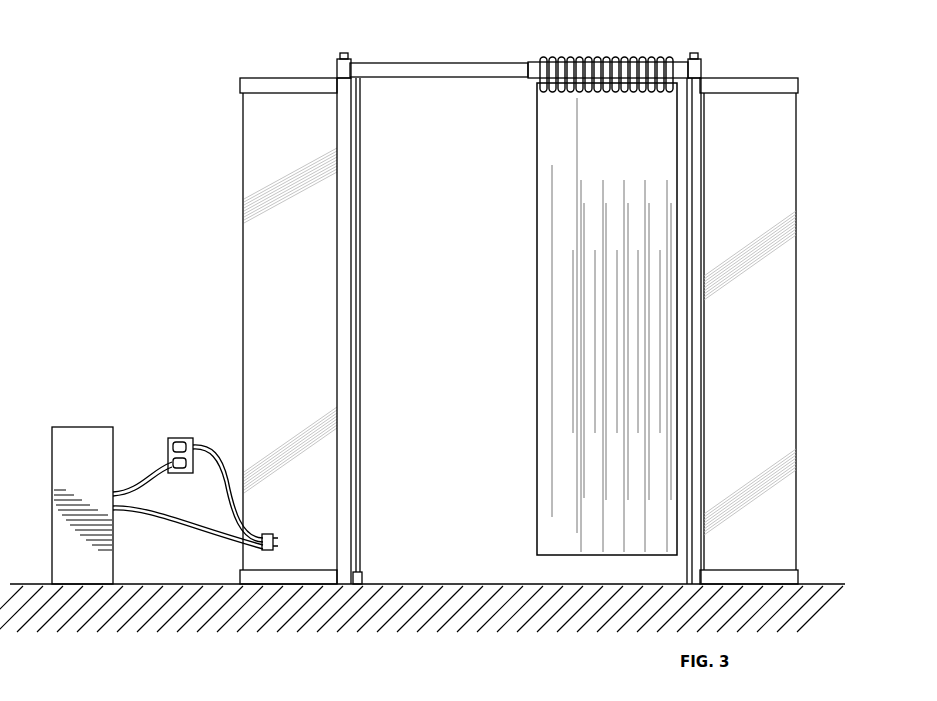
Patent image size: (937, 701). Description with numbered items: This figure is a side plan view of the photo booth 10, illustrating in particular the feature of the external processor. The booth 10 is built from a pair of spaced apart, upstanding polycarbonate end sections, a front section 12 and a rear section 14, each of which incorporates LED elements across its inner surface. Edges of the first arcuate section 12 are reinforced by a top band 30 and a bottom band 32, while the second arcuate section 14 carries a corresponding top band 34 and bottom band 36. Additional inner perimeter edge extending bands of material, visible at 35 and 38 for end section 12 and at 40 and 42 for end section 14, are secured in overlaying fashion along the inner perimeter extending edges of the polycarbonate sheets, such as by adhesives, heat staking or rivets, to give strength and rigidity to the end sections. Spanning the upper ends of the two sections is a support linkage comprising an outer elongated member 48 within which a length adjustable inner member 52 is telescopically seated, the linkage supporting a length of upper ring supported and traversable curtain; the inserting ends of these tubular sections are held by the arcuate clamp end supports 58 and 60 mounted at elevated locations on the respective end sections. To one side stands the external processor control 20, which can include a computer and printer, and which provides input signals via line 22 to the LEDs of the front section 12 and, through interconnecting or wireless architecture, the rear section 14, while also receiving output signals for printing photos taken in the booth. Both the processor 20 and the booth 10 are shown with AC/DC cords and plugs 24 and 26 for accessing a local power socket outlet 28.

The booth 10 is at (127, 136).
The front section 12 is at (308, 306).
The rear section 14 is at (768, 328).
The external processor control 20 is at (75, 434).
The line 22 is at (193, 538).
The AC/DC cord and plug 24 is at (218, 456).
The AC/DC cord and plug 26 is at (140, 484).
The local power socket outlet 28 is at (174, 439).
The top band 30 is at (250, 87).
The bottom band 32 is at (275, 581).
The top band 34 is at (796, 86).
The inner perimeter edge extending band 35 is at (344, 315).
The bottom band 36 is at (792, 578).
The inner perimeter edge extending band 38 is at (336, 76).
The inner perimeter edge extending band 40 is at (694, 168).
The inner perimeter edge extending band 42 is at (703, 78).
The outer elongated member 48 is at (535, 64).
The inner member 52 is at (404, 64).
The end support 58 is at (343, 61).
The end support 60 is at (699, 60).